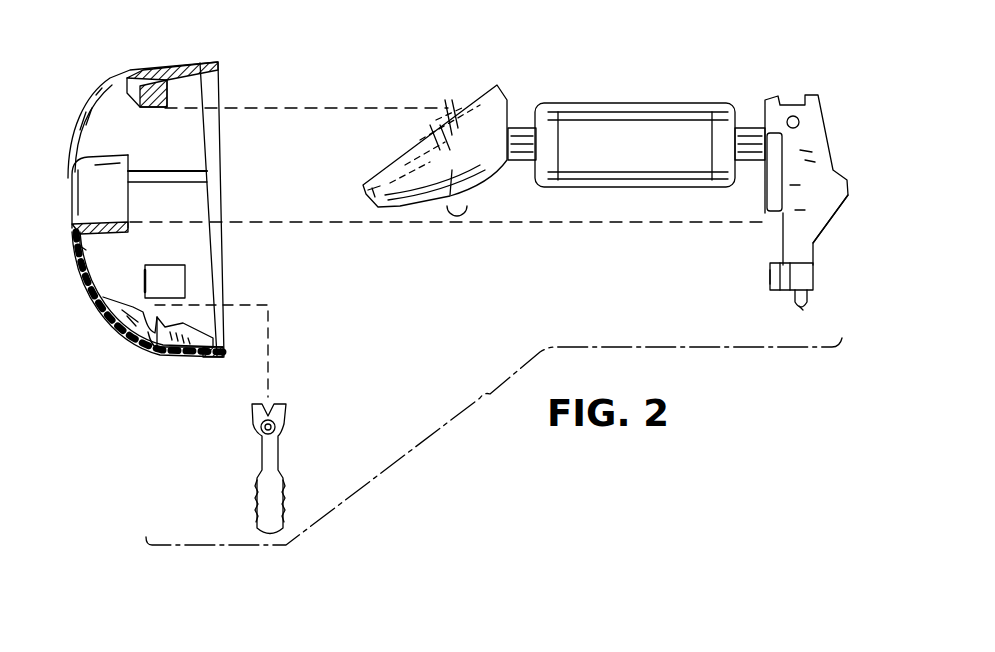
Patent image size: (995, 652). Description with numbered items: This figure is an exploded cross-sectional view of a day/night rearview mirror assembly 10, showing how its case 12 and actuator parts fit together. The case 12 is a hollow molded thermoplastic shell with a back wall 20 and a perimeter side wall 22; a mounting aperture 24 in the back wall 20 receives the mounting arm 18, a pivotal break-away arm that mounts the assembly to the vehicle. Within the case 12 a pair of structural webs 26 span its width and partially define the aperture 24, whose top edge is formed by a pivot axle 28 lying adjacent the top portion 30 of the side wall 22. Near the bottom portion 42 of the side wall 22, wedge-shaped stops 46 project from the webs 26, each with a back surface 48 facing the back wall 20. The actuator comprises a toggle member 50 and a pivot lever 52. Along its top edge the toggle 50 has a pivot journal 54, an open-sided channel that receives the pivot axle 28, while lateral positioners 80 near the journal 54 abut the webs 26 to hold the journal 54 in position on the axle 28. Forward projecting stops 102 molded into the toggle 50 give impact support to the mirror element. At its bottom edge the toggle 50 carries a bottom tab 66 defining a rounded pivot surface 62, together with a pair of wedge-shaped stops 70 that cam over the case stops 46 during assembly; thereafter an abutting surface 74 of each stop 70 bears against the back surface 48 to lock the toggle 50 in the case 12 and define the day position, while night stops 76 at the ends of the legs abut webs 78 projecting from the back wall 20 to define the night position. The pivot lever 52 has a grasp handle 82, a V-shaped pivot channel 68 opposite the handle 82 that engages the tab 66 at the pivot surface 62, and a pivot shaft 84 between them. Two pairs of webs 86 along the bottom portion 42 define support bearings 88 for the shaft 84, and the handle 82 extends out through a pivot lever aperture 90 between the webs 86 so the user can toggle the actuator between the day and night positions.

The day/night rearview mirror assembly 10 is at (565, 292).
The case 12 is at (141, 58).
The mounting arm 18 is at (656, 100).
The back wall 20 is at (70, 189).
The perimeter side wall 22 is at (180, 63).
The mounting aperture 24 is at (99, 108).
The structural webs 26 is at (207, 176).
The pivot axle 28 is at (153, 108).
The top portion 30 is at (136, 76).
The bottom portion 42 is at (208, 356).
The wedge-shaped stops 46 is at (182, 278).
The back surface 48 is at (146, 279).
The toggle member 50 is at (763, 181).
The pivot lever 52 is at (268, 469).
The pivot journal 54 is at (786, 92).
The pivot surface 62 is at (801, 307).
The bottom tab 66 is at (808, 295).
The pivot channel 68 is at (266, 390).
The stops 70 is at (783, 261).
The abutting surface 74 is at (775, 267).
The night stops 76 is at (770, 285).
The webs 78 is at (83, 276).
The lateral positioners 80 is at (800, 122).
The grasp handle 82 is at (276, 489).
The pivot shaft 84 is at (278, 429).
The webs 86 is at (102, 318).
The support bearings 88 is at (150, 350).
The pivot lever aperture 90 is at (155, 352).
The forward projecting stops 102 is at (838, 199).